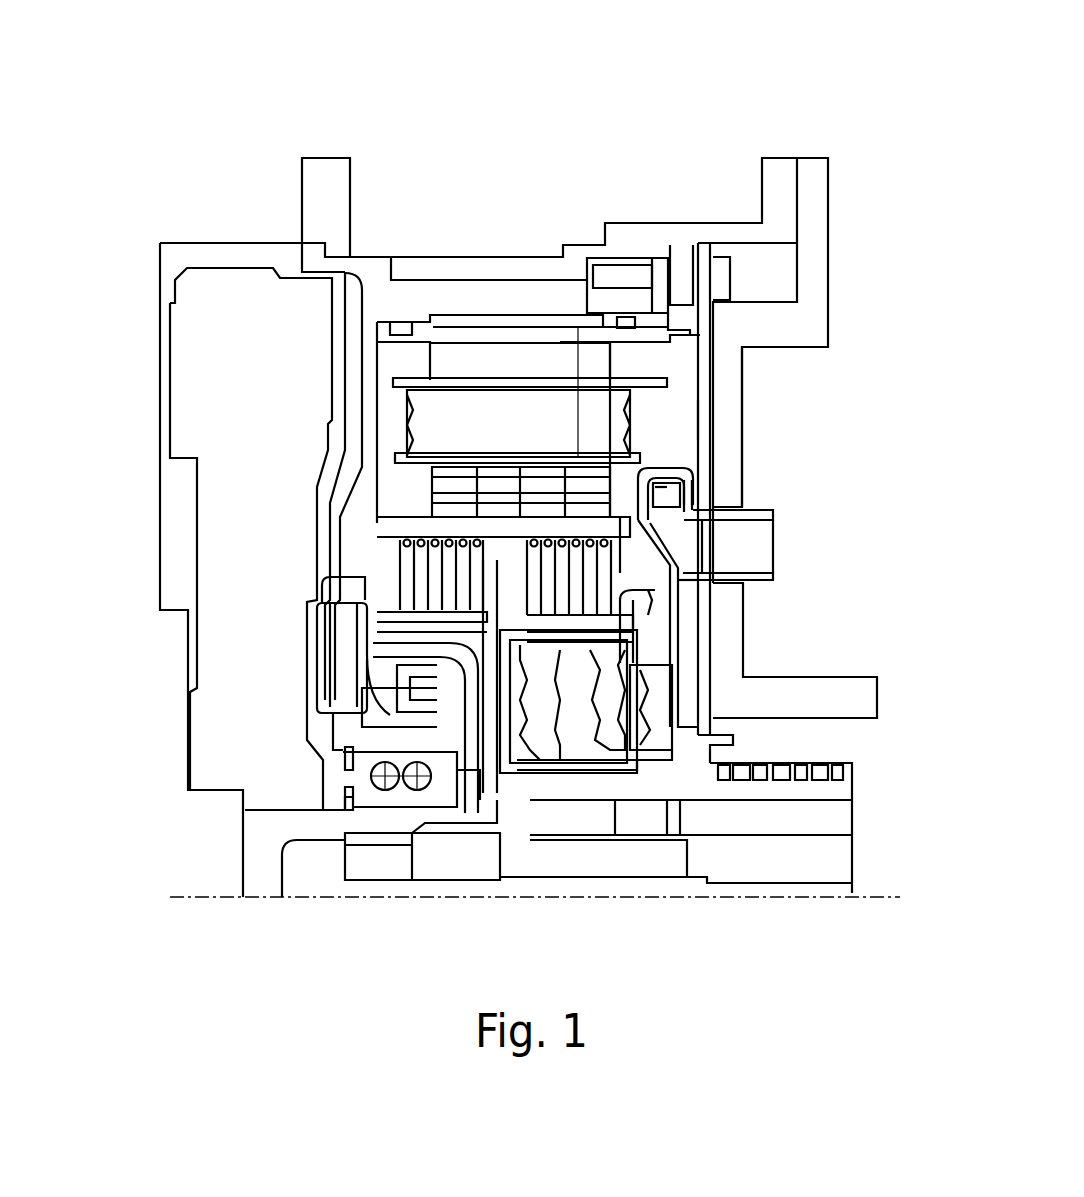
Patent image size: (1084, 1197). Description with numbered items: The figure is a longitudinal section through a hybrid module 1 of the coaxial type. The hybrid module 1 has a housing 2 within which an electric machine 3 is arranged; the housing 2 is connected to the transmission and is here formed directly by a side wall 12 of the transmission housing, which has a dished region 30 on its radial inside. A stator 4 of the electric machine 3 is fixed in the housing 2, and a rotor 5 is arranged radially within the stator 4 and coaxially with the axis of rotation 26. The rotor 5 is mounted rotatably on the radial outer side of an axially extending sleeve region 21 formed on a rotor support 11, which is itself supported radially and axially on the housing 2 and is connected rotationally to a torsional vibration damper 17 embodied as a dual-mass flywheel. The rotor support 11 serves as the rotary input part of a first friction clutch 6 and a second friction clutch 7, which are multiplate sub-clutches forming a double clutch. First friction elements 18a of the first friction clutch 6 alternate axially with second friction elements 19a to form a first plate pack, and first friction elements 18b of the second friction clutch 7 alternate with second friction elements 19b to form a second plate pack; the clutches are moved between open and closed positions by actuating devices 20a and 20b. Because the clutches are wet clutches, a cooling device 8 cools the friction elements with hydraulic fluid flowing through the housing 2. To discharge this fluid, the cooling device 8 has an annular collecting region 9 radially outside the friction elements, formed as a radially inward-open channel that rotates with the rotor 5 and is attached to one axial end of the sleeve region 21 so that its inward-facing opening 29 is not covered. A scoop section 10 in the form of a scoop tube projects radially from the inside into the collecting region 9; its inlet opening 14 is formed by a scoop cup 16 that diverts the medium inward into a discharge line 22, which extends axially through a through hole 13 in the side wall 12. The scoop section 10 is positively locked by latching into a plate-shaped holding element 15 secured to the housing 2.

The hybrid module 1 is at (314, 106).
The housing 2 is at (627, 243).
The electric machine 3 is at (465, 248).
The stator 4 is at (622, 417).
The rotor 5 is at (495, 483).
The first friction clutch 6 is at (437, 605).
The second friction clutch 7 is at (590, 603).
The cooling device 8 is at (723, 463).
The collecting region 9 is at (692, 490).
The scoop section 10 is at (760, 570).
The rotor support 11 is at (467, 762).
The side wall 12 is at (815, 187).
The through hole 13 is at (752, 513).
The inlet opening 14 is at (667, 487).
The holding element 15 is at (703, 418).
The scoop cup 16 is at (707, 485).
The torsional vibration damper 17 is at (203, 352).
The first friction elements of the first friction clutch 18a is at (435, 593).
The first friction elements of the second friction clutch 18b is at (602, 657).
The second friction elements of the first friction clutch 19a is at (412, 655).
The second friction elements of the second friction clutch 19b is at (598, 660).
The actuating device 20a is at (662, 727).
The actuating device 20b is at (587, 765).
The sleeve region 21 is at (420, 525).
The discharge line 22 is at (680, 548).
The axis of rotation 26 is at (880, 898).
The opening 29 is at (674, 515).
The dished region 30 is at (847, 693).